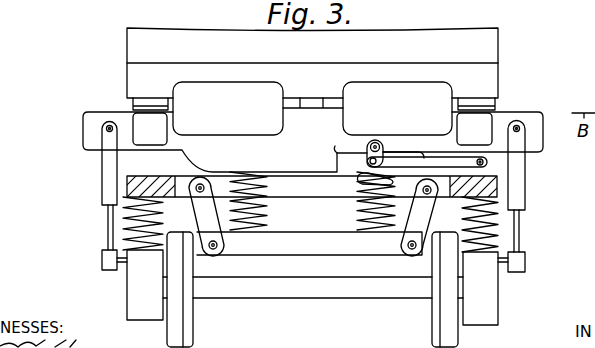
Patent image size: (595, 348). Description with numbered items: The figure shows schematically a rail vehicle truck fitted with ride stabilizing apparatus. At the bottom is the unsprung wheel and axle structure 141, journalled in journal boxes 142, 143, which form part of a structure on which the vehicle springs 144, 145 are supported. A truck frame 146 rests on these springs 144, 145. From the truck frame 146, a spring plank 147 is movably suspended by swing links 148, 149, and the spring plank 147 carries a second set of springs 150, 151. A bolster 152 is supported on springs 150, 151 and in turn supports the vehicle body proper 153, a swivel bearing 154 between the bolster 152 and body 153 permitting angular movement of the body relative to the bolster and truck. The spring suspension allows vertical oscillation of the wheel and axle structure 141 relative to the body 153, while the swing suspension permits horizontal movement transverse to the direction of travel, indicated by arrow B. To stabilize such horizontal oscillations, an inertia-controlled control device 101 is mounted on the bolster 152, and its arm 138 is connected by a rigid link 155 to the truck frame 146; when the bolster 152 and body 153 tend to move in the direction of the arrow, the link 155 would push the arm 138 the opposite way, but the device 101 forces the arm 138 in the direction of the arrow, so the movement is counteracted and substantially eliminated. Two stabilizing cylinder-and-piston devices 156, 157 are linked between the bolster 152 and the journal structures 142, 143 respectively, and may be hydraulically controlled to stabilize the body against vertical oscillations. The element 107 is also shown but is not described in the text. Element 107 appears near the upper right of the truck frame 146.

The control device 101 is at (340, 160).
The side bearing 107 is at (477, 125).
The arm 138 is at (385, 130).
The wheel and axle structure 141 is at (293, 298).
The journal box 142 is at (127, 297).
The journal box 143 is at (498, 294).
The vehicle spring 144 is at (160, 217).
The vehicle spring 145 is at (498, 228).
The truck frame 146 is at (302, 178).
The spring plank 147 is at (305, 247).
The swing link 148 is at (222, 231).
The swing link 149 is at (403, 237).
The spring 150 is at (265, 217).
The spring 151 is at (356, 217).
The bolster 152 is at (200, 150).
The vehicle body 153 is at (490, 52).
The swivel bearing 154 is at (332, 106).
The rigid link 155 is at (448, 162).
The stabilizing cylinder-and-piston device 156 is at (106, 182).
The stabilizing cylinder-and-piston device 157 is at (524, 173).